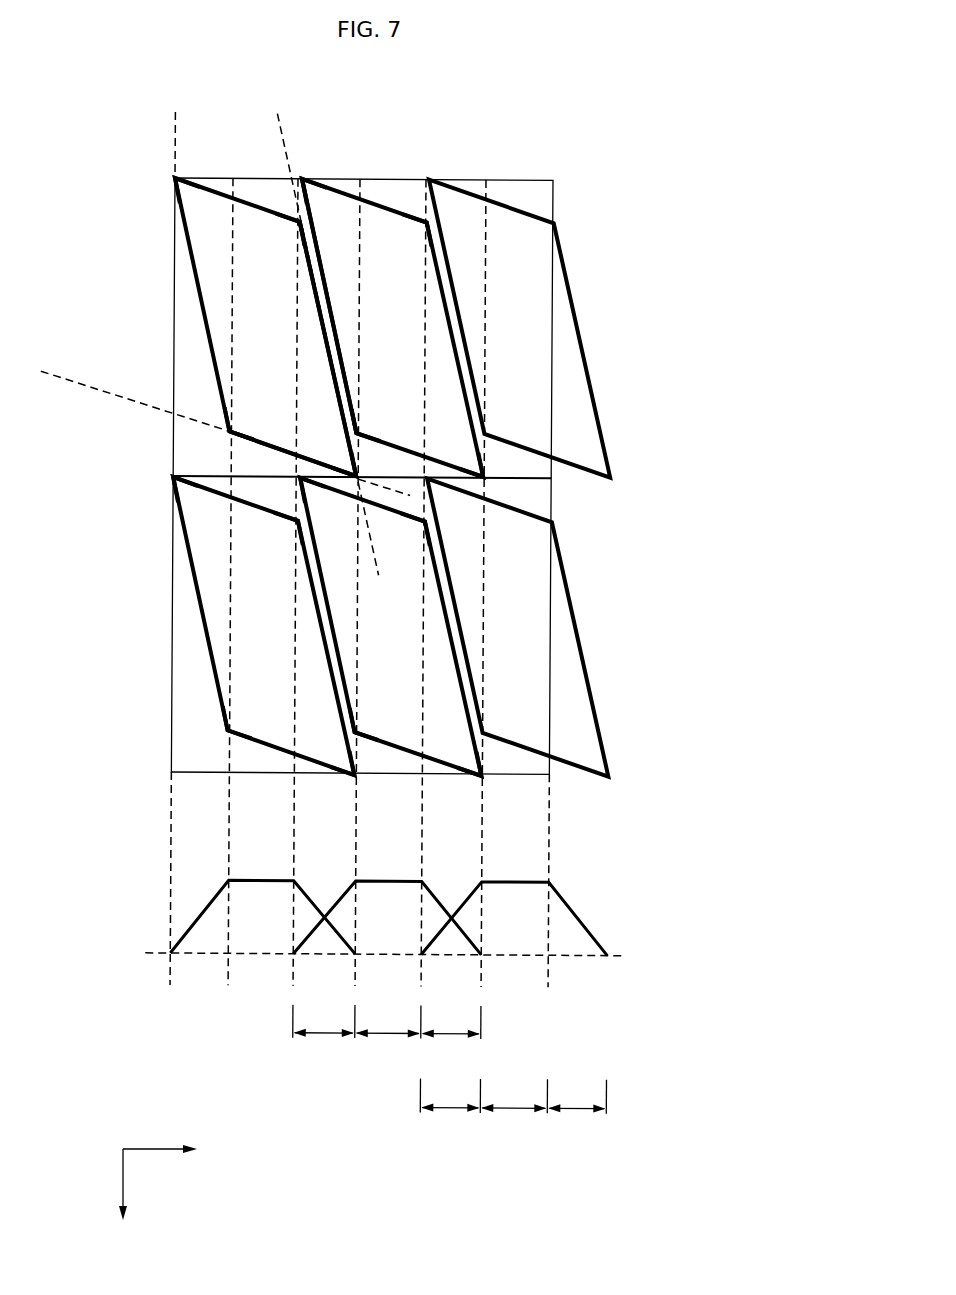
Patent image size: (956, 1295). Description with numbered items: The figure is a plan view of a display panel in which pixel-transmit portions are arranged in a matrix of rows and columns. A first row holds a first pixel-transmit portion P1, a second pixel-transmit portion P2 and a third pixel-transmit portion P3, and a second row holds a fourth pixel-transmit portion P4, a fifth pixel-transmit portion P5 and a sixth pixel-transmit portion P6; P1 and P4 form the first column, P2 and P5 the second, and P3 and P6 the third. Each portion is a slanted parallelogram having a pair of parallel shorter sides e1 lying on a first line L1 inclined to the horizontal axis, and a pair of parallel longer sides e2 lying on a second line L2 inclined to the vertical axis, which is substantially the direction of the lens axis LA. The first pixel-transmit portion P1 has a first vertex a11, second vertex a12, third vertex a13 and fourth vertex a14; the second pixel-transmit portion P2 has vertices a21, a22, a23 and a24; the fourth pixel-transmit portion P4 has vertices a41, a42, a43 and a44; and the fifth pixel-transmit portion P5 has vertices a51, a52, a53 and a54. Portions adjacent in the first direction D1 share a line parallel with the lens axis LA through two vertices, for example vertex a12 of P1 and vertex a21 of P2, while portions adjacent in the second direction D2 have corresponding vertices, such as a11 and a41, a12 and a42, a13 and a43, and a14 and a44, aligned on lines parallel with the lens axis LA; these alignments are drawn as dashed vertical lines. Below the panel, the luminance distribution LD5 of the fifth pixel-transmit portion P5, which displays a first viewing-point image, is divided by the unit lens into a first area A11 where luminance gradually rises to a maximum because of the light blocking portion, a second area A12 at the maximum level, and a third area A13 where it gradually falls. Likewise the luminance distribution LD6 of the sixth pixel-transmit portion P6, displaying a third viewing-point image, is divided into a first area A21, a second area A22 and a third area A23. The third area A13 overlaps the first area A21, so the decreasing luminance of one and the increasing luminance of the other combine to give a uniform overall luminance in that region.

The first pixel-transmit portion P1 is at (265, 327).
The second pixel-transmit portion P2 is at (392, 328).
The third pixel-transmit portion P3 is at (519, 329).
The fourth pixel-transmit portion P4 is at (263, 626).
The fifth pixel-transmit portion P5 is at (390, 627).
The sixth pixel-transmit portion P6 is at (517, 628).
The first vertex of the first pixel-transmit portion a11 is at (175, 178).
The second vertex of the first pixel-transmit portion a12 is at (300, 222).
The third vertex of the first pixel-transmit portion a13 is at (230, 431).
The fourth vertex of the first pixel-transmit portion a14 is at (356, 475).
The first vertex of the second pixel-transmit portion a21 is at (303, 178).
The second vertex of the second pixel-transmit portion a22 is at (427, 219).
The third vertex of the second pixel-transmit portion a23 is at (358, 435).
The fourth vertex of the second pixel-transmit portion a24 is at (484, 478).
The first vertex of the fourth pixel-transmit portion a41 is at (175, 477).
The second vertex of the fourth pixel-transmit portion a42 is at (300, 521).
The third vertex of the fourth pixel-transmit portion a43 is at (230, 730).
The fourth vertex of the fourth pixel-transmit portion a44 is at (356, 774).
The first vertex of the fifth pixel-transmit portion a51 is at (304, 480).
The second vertex of the fifth pixel-transmit portion a52 is at (426, 518).
The third vertex of the fifth pixel-transmit portion a53 is at (358, 735).
The fourth vertex of the fifth pixel-transmit portion a54 is at (483, 773).
The shorter side e1 is at (262, 441).
The longer side e2 is at (313, 283).
The first line L1 is at (45, 370).
The second line L2 is at (279, 118).
The lens axis LA is at (176, 133).
The luminance distribution of the fifth pixel-transmit portion LD5 is at (392, 880).
The luminance distribution of the sixth pixel-transmit portion LD6 is at (517, 880).
The first area A11 is at (324, 1048).
The second area A12 is at (388, 1048).
The third area A13 is at (451, 1048).
The first area A21 is at (450, 1122).
The second area A22 is at (513, 1122).
The third area A23 is at (576, 1122).
The first direction D1 is at (179, 1152).
The second direction D2 is at (125, 1200).